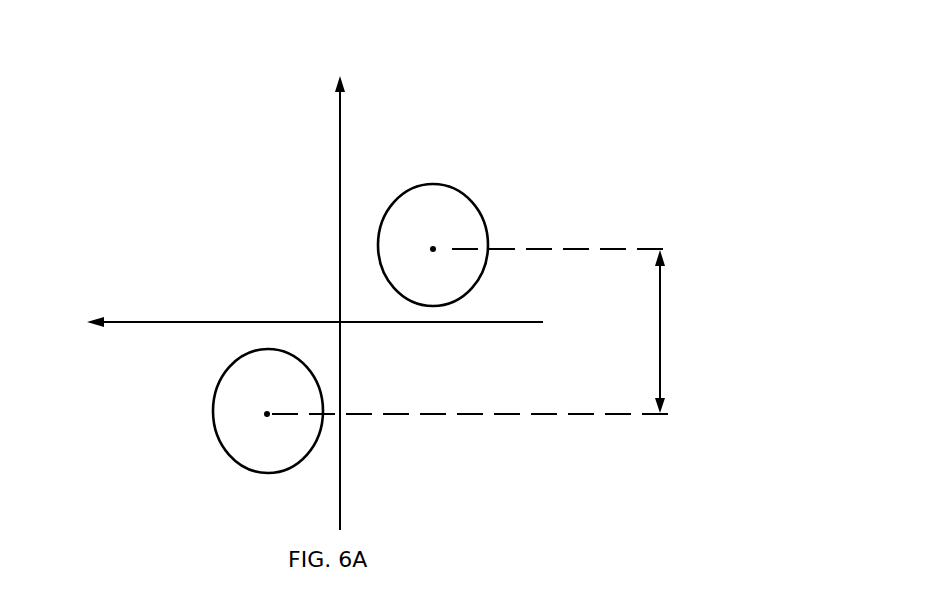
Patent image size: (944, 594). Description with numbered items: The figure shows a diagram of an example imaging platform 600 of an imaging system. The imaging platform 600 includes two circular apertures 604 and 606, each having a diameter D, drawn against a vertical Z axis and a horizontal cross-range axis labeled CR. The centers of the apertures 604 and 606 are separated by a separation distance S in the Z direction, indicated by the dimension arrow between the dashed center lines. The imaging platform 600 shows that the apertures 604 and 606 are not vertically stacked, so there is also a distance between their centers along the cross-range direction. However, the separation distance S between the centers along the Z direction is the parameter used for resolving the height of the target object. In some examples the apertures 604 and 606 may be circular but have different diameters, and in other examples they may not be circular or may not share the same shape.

The imaging platform 600 is at (507, 54).
The circular aperture 604 is at (472, 203).
The circular aperture 606 is at (228, 455).